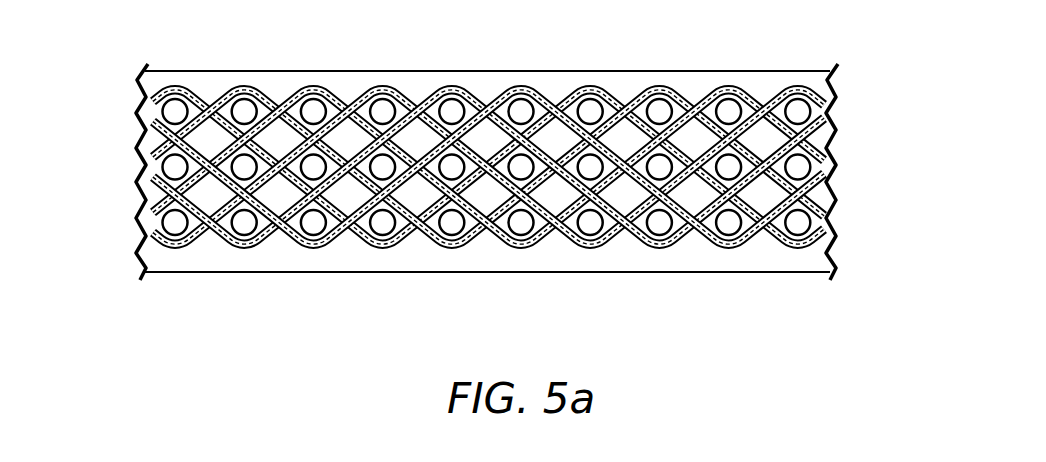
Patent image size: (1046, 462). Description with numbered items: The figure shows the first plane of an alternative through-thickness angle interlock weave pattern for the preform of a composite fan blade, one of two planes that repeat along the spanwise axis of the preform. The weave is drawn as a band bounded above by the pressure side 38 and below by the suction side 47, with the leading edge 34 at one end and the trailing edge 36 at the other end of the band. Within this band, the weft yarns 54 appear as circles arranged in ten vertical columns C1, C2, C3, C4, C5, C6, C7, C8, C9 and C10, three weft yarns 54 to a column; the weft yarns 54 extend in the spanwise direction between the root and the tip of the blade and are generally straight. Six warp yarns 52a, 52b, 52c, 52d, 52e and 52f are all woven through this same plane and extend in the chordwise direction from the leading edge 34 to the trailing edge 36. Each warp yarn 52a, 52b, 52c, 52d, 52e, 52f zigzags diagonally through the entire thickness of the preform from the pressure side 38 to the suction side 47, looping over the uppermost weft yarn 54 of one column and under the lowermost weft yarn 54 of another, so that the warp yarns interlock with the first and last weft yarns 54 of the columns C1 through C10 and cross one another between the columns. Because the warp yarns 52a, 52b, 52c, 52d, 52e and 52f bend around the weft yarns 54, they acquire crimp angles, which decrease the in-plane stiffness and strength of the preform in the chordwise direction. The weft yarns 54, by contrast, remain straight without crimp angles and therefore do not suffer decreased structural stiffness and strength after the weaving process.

The leading edge 34 is at (834, 80).
The trailing edge 36 is at (141, 110).
The pressure side 38 is at (215, 70).
The suction side 47 is at (600, 273).
The warp yarn 52a is at (827, 101).
The warp yarn 52b is at (827, 120).
The warp yarn 52c is at (827, 176).
The warp yarn 52d is at (827, 239).
The warp yarn 52e is at (827, 160).
The warp yarn 52f is at (827, 214).
The weft yarns 54 is at (490, 136).
The column C1 is at (182, 228).
The column C2 is at (251, 228).
The column C3 is at (320, 228).
The column C4 is at (390, 228).
The column C5 is at (459, 228).
The column C6 is at (528, 228).
The column C7 is at (597, 228).
The column C8 is at (666, 228).
The column C9 is at (736, 228).
The column C10 is at (805, 228).